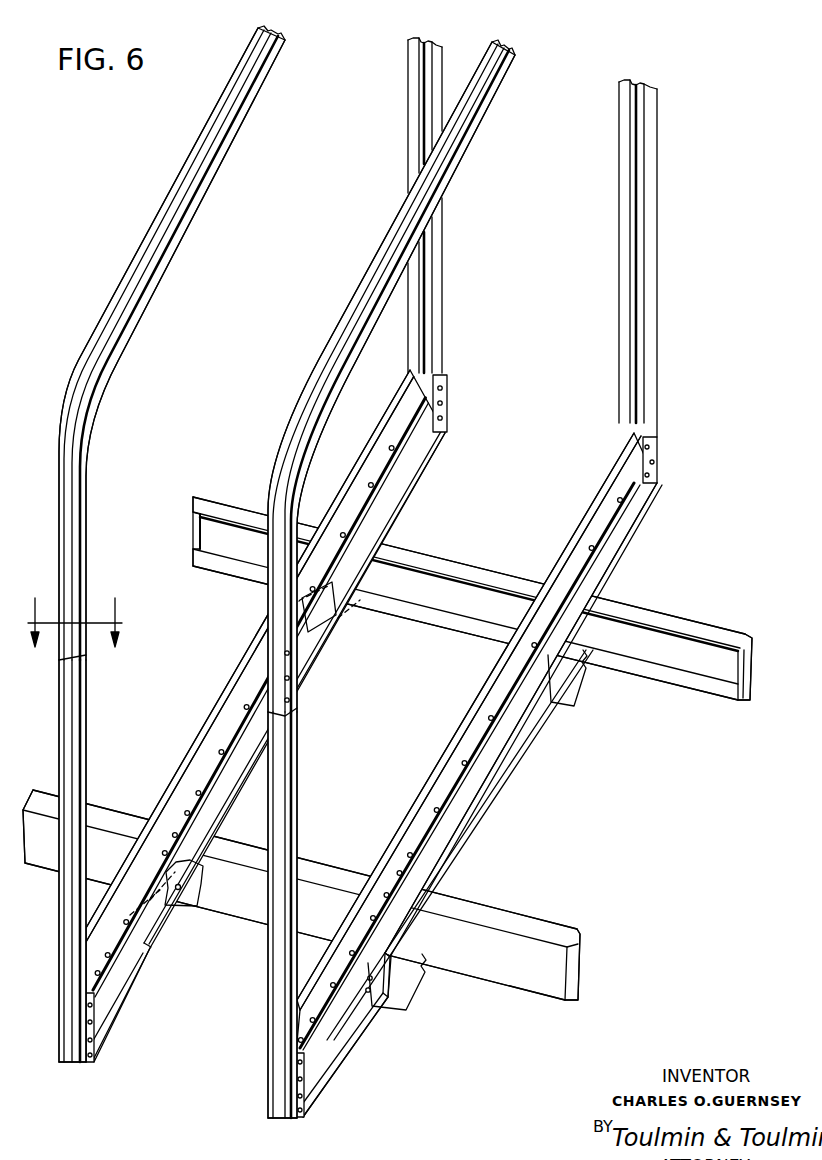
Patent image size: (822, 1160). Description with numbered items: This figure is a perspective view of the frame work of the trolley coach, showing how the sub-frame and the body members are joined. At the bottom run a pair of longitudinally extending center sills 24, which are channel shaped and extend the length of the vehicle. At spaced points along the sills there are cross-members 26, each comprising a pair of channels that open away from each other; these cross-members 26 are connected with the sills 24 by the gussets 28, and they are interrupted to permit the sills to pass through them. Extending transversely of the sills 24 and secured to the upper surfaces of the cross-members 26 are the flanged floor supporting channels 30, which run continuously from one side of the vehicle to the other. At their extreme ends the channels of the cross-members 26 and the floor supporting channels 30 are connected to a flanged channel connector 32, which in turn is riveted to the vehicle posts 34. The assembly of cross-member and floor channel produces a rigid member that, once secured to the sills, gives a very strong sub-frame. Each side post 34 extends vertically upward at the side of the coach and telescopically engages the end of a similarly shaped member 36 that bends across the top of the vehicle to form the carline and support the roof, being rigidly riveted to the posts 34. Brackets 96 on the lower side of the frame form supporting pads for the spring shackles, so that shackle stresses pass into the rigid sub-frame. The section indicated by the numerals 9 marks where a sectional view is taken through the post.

The center sill 24 is at (668, 677).
The cross-member 26 is at (373, 521).
The gusset 28 is at (322, 618).
The flanged floor supporting channel 30 is at (221, 733).
The flanged channel connector 32 is at (414, 430).
The side post 34 is at (442, 250).
The carline member 36 is at (84, 462).
The bracket 96 is at (566, 688).
The section line 9- 9 is at (75, 637).